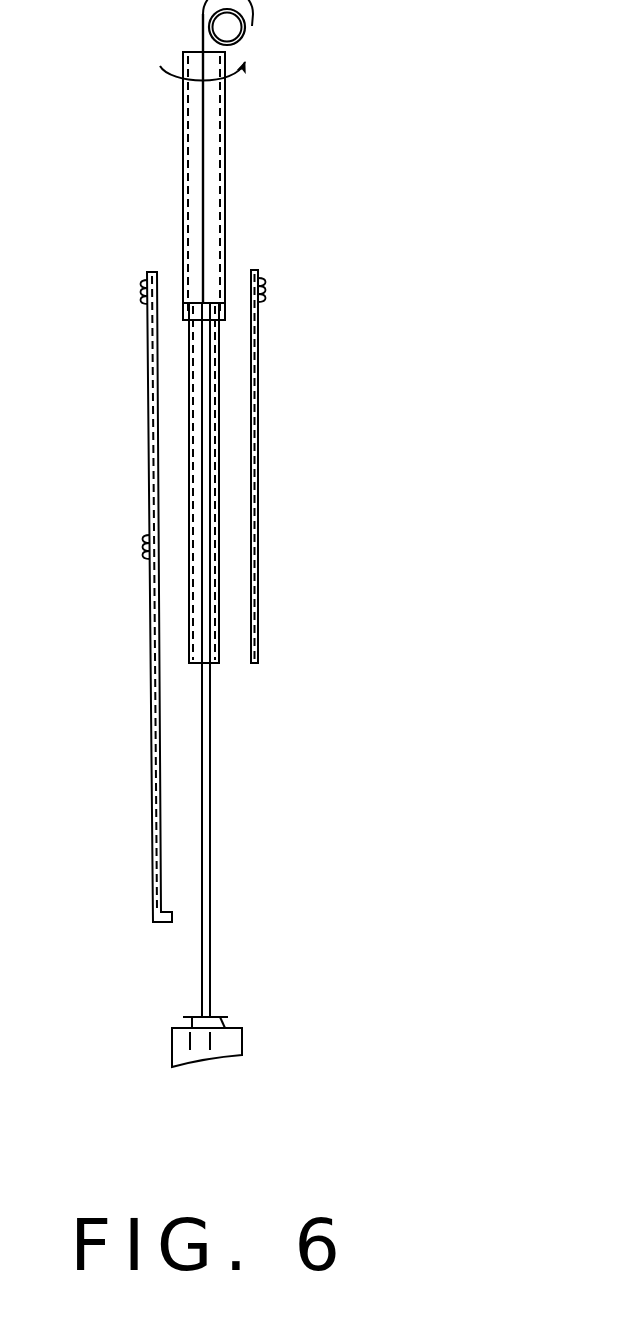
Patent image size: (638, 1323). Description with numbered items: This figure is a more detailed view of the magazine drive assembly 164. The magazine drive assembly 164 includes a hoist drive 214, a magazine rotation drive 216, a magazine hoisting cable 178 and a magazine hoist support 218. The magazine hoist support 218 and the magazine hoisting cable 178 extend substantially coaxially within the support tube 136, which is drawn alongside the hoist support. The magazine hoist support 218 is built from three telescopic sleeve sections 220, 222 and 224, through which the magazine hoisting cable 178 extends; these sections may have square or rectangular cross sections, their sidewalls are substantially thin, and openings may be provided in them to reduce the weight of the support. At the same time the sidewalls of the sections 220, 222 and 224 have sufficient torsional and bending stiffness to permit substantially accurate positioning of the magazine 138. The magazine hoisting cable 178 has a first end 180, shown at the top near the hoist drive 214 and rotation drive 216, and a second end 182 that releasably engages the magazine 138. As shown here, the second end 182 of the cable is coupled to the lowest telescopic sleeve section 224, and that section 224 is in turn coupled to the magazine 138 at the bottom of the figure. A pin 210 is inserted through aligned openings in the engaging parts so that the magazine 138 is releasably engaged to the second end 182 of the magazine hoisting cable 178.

The support tube 136 is at (150, 432).
The magazine 138 is at (205, 1040).
The magazine drive assembly 164 is at (370, 115).
The magazine hoisting cable 178 is at (205, 214).
The first end 180 is at (203, 40).
The second end 182 is at (218, 1017).
The pin 210 is at (190, 1017).
The hoist drive 214 is at (258, 14).
The magazine rotation drive 216 is at (242, 74).
The magazine hoist support 218 is at (226, 156).
The telescopic sleeve section 220 is at (234, 308).
The telescopic sleeve section 222 is at (224, 378).
The telescopic sleeve section 224 is at (213, 718).